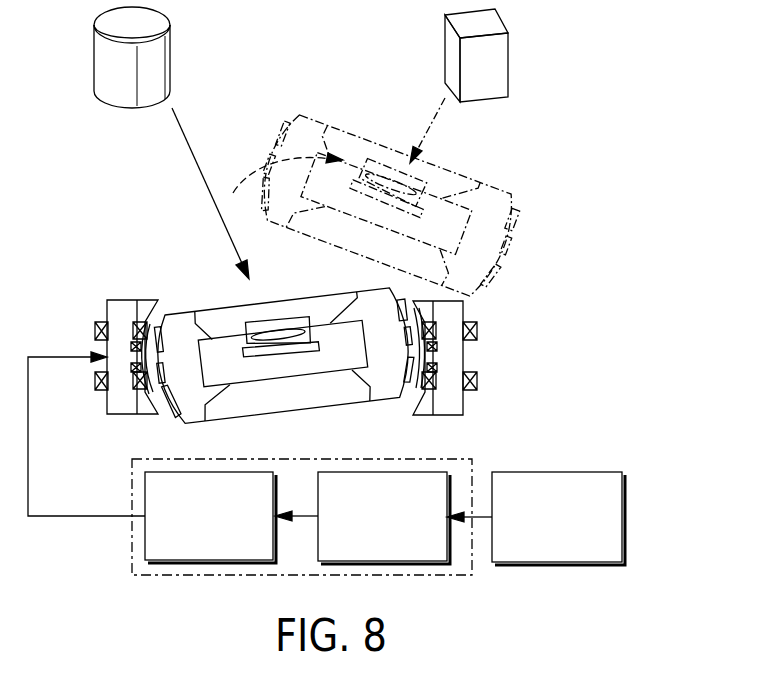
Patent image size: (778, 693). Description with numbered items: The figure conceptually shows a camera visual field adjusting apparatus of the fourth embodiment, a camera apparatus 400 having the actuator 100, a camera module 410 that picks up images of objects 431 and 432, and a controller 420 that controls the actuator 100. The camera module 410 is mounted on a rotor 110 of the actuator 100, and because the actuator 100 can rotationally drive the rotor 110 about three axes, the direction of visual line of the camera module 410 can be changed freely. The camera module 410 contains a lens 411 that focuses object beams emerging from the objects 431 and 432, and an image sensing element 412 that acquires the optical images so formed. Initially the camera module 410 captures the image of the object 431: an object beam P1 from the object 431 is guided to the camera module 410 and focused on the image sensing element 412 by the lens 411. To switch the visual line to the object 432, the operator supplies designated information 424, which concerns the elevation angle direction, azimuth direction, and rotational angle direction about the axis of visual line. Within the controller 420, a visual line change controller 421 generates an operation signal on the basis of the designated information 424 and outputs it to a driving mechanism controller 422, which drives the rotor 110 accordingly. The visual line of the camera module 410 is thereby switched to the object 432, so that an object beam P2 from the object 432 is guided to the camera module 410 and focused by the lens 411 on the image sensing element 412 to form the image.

The camera apparatus 400 is at (630, 69).
The object 431 is at (107, 68).
The object 432 is at (452, 62).
The object beam P1 is at (202, 178).
The object beam P2 is at (430, 128).
The camera module 410 is at (352, 358).
The lens 411 is at (250, 326).
The image sensing element 412 is at (303, 350).
The rotor 110 is at (208, 323).
The actuator 100 is at (495, 377).
The controller 420 is at (455, 460).
The visual line change controller 421 is at (377, 472).
The driving mechanism controller 422 is at (145, 543).
The designated information 424 is at (622, 512).